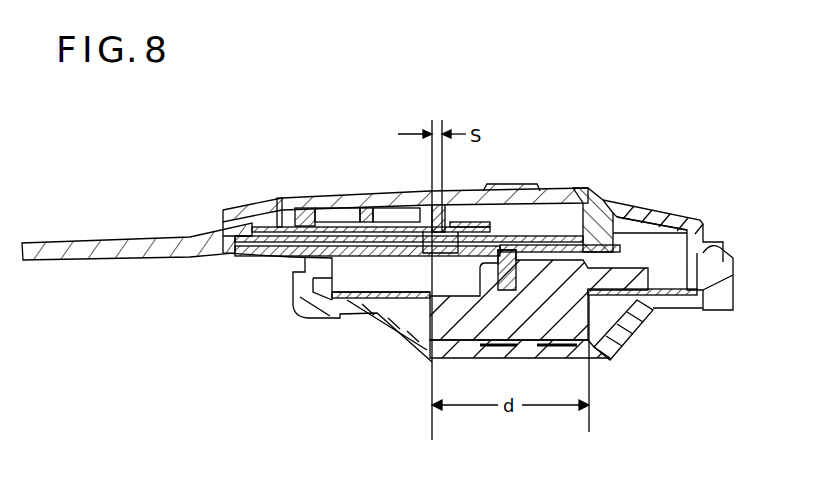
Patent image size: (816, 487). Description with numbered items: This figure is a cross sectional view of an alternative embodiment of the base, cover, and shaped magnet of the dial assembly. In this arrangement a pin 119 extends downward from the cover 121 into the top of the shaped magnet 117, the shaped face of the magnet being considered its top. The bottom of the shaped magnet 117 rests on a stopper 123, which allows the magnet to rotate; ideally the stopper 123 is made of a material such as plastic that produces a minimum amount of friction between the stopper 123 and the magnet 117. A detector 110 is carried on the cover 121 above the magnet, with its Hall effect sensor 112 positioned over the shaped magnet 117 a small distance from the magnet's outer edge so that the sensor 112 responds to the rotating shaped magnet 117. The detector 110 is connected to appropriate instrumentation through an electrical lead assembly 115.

The detector 110 is at (337, 196).
The Hall effect sensor 112 is at (403, 193).
The electrical lead assembly 115 is at (242, 258).
The shaped magnet 117 is at (595, 323).
The pin 119 is at (517, 272).
The cover 121 is at (617, 210).
The stopper 123 is at (596, 358).